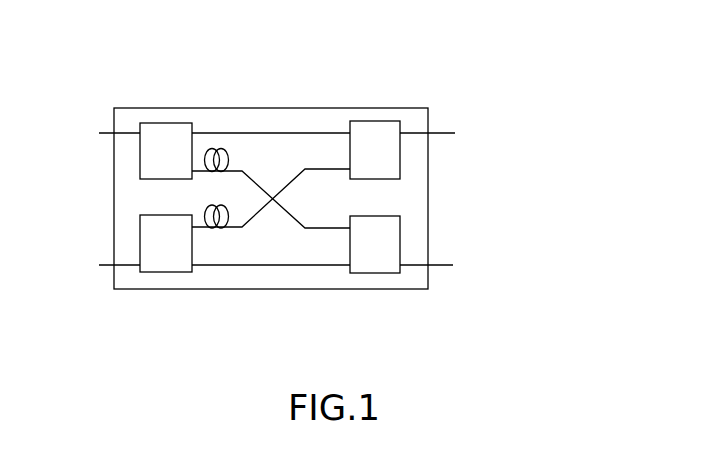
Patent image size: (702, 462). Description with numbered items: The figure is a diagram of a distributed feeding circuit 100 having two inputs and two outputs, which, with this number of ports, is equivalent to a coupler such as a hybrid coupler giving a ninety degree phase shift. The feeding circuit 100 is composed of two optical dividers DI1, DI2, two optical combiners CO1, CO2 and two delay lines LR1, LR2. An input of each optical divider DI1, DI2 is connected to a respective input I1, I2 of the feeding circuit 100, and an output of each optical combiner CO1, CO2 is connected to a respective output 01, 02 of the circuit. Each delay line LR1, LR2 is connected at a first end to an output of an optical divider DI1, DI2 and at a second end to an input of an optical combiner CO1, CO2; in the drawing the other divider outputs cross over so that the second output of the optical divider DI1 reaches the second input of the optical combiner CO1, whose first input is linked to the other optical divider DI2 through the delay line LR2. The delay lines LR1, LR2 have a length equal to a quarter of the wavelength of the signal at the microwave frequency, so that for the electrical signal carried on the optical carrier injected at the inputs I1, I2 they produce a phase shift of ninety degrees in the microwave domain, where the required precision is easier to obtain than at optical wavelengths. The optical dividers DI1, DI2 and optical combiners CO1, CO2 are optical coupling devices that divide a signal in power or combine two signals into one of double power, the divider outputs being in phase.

The feeding circuit 100 is at (513, 166).
The input I1 is at (102, 132).
The input I2 is at (102, 265).
The optical divider DI1 is at (163, 122).
The optical divider DI2 is at (163, 272).
The delay line LR1 is at (225, 148).
The delay line LR2 is at (228, 220).
The optical combiner CO1 is at (375, 121).
The optical combiner CO2 is at (377, 273).
The output 01 is at (445, 132).
The output 02 is at (443, 265).